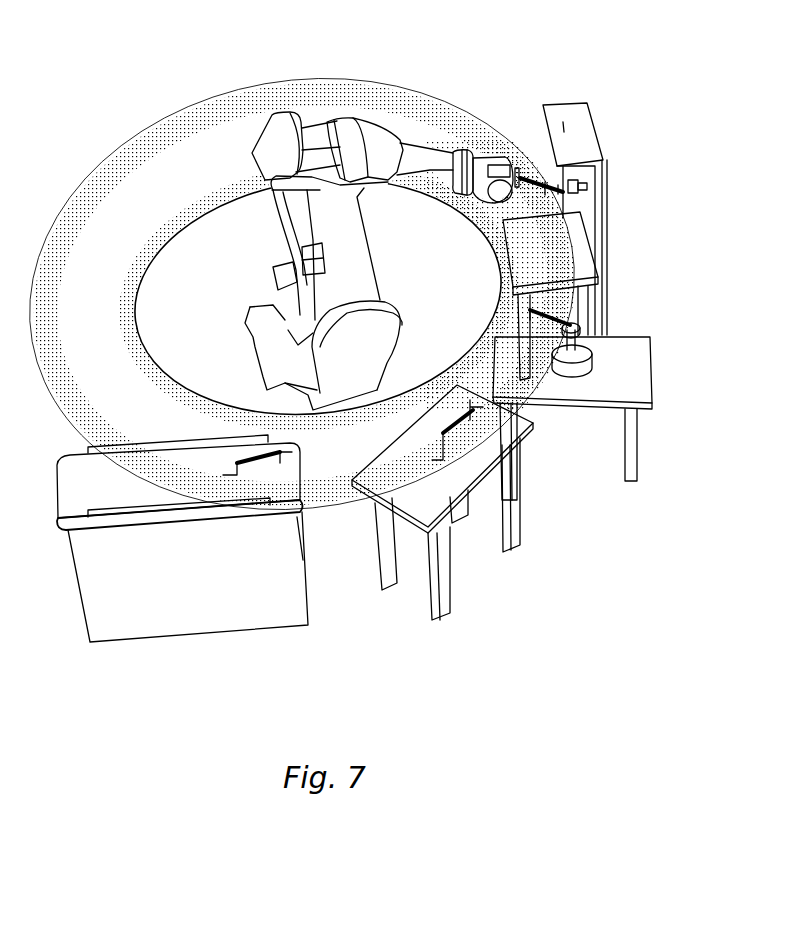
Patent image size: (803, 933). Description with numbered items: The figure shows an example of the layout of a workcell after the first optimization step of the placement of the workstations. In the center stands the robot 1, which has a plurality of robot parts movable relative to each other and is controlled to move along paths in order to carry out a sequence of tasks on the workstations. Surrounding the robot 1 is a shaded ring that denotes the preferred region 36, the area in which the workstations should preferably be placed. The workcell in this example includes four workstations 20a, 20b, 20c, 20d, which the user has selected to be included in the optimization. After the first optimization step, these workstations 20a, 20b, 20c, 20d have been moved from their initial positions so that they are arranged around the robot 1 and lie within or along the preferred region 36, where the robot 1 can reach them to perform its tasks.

The robot 1 is at (375, 128).
The preferred region 36 is at (118, 200).
The workstation 20a is at (432, 503).
The workstation 20b is at (577, 128).
The workstation 20c is at (203, 593).
The workstation 20d is at (635, 368).